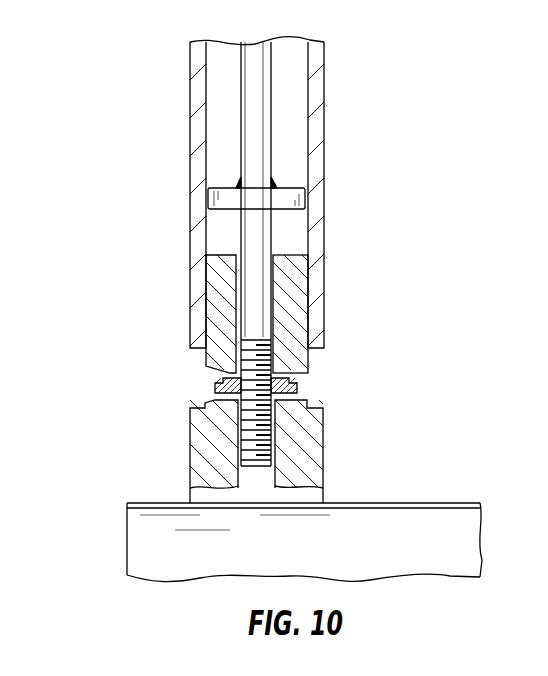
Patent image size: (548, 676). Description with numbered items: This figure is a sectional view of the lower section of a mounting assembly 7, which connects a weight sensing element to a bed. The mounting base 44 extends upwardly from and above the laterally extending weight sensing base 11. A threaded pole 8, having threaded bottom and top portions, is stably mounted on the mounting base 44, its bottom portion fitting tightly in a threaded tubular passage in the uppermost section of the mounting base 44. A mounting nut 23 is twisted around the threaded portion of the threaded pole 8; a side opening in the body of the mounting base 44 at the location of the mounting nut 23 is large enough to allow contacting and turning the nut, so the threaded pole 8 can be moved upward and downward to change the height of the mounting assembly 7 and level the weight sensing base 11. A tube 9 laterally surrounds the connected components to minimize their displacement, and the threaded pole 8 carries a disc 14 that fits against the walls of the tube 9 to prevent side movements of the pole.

The mounting assembly 7 is at (340, 379).
The threaded pole 8 is at (252, 455).
The tube 9 is at (325, 143).
The weight sensing base 11 is at (143, 544).
The disc 14 is at (298, 198).
The mounting nut 23 is at (215, 386).
The mounting base 44 is at (325, 466).